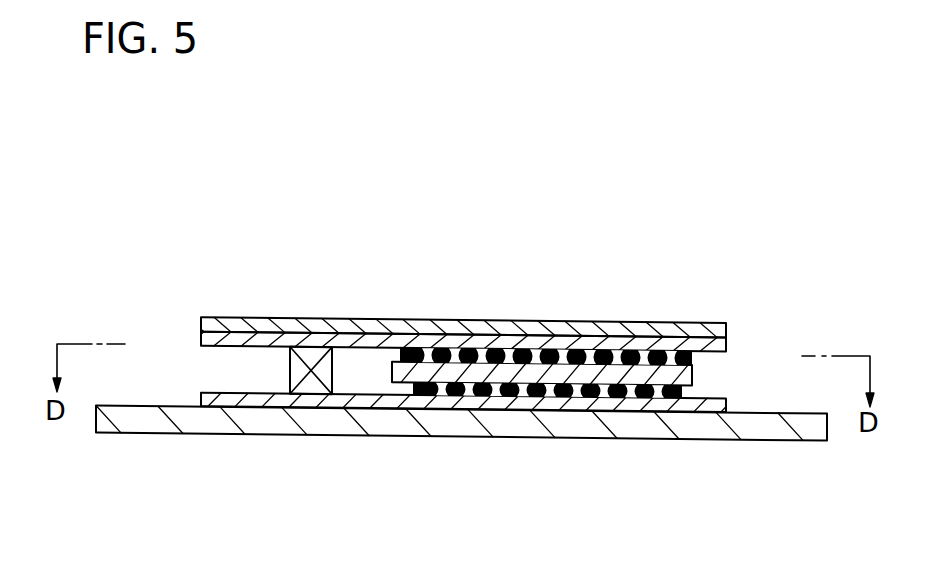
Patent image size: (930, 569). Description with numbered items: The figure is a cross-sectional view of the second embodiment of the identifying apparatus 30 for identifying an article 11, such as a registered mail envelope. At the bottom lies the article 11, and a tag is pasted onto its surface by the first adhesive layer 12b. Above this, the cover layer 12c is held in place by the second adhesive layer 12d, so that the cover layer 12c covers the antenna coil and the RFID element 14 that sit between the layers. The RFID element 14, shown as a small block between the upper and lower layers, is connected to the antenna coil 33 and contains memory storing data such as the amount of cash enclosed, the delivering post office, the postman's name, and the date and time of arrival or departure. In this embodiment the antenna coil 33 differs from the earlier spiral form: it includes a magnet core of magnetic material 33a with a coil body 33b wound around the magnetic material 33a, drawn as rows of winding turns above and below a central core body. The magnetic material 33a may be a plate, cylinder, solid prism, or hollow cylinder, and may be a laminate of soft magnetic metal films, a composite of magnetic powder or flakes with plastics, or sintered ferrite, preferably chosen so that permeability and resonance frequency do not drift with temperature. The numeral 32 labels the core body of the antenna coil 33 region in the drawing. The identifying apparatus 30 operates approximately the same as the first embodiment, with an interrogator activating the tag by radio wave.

The article 11 is at (595, 440).
The first adhesive layer 12b is at (727, 406).
The cover layer 12c is at (713, 323).
The second adhesive layer 12d is at (730, 345).
The RFID element 14 is at (290, 370).
The identifying apparatus 30 is at (157, 226).
The semiconductor chip 32 is at (555, 322).
The antenna coil 33 is at (443, 272).
The magnetic material 33a is at (390, 373).
The coil body 33b is at (401, 352).